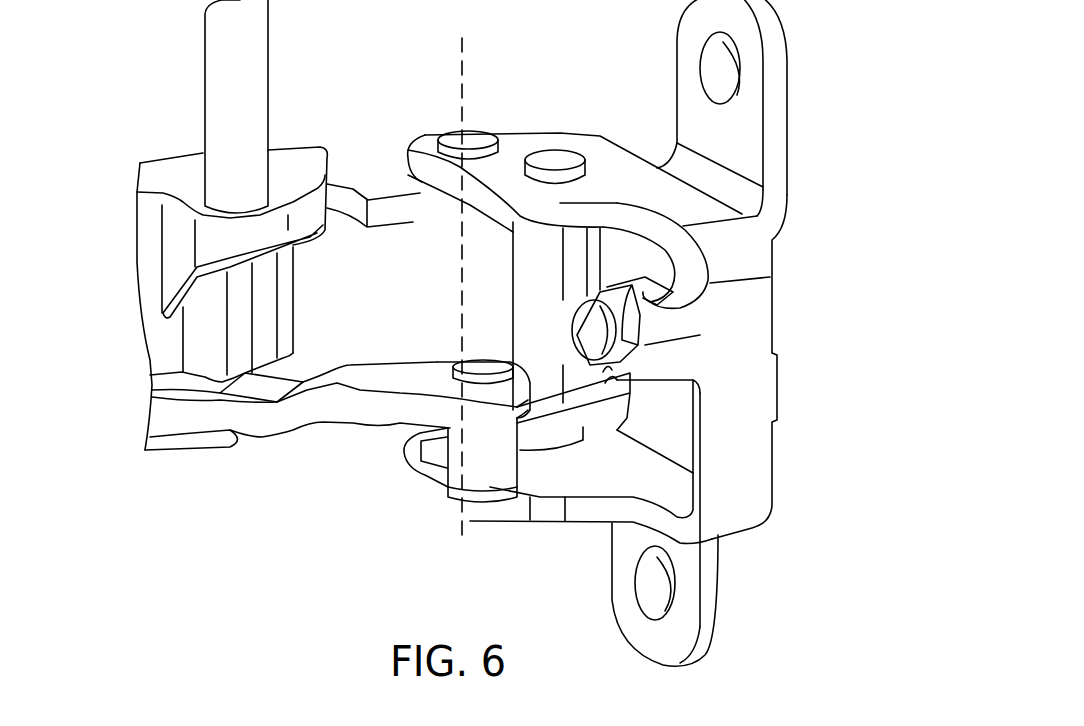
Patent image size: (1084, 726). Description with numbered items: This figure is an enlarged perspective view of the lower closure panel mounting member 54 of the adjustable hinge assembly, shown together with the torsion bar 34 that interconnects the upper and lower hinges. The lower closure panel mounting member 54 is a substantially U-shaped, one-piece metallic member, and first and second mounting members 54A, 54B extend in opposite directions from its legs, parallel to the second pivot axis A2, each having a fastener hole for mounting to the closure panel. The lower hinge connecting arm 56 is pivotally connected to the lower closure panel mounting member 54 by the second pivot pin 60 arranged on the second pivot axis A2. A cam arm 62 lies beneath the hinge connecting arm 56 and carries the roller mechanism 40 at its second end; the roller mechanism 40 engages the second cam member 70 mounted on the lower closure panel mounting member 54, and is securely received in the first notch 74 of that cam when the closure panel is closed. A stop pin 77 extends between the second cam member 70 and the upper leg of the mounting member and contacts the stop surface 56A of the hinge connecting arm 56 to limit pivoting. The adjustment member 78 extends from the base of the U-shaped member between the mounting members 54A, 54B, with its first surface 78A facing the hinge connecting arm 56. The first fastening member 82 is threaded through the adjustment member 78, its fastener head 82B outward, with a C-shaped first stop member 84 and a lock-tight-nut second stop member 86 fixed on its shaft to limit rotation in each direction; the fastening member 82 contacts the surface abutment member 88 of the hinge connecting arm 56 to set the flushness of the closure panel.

The torsion bar 34 is at (207, 71).
The second pivot axis A2 is at (459, 63).
The surface abutment member 88 is at (263, 310).
The lower hinge connecting arm 56 is at (376, 186).
The second pivot pin 60 is at (482, 128).
The hanger plate 77 is at (540, 260).
The stop surface 56A is at (577, 277).
The adjustment member 78 is at (627, 287).
The first stop member 84 is at (637, 312).
The second stop member 86 is at (696, 243).
The first fastening member 82 is at (585, 333).
The fastener head 82B is at (640, 338).
The lower closure panel mounting member 54 is at (773, 321).
The first mounting member 54A is at (777, 30).
The second mounting member 54B is at (717, 633).
The first surface 78A is at (658, 355).
The first notch 74 is at (623, 383).
The second cam member 70 is at (593, 423).
The cam arm 62 is at (353, 412).
The roller mechanism 40 is at (490, 470).